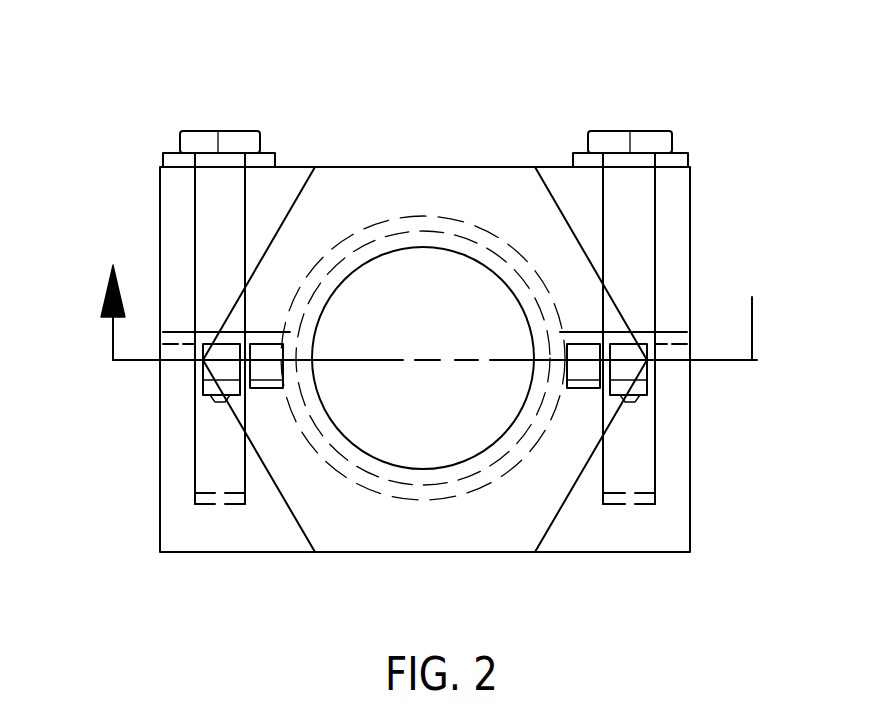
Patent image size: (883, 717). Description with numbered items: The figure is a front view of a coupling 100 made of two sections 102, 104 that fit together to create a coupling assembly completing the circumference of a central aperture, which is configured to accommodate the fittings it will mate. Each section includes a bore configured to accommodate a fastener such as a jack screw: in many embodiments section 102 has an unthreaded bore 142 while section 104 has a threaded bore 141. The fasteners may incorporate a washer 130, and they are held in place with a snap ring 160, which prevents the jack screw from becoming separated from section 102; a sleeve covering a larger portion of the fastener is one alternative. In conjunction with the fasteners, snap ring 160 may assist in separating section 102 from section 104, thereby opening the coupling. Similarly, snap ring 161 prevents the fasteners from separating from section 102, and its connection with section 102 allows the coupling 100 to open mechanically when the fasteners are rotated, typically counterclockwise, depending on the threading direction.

The coupling 100 is at (172, 72).
The section 102 is at (336, 154).
The section 104 is at (352, 564).
The washer 130 is at (274, 146).
The threaded bore 141 is at (617, 447).
The unthreaded bore 142 is at (626, 245).
The snap ring 160 is at (182, 347).
The snap ring 161 is at (188, 337).